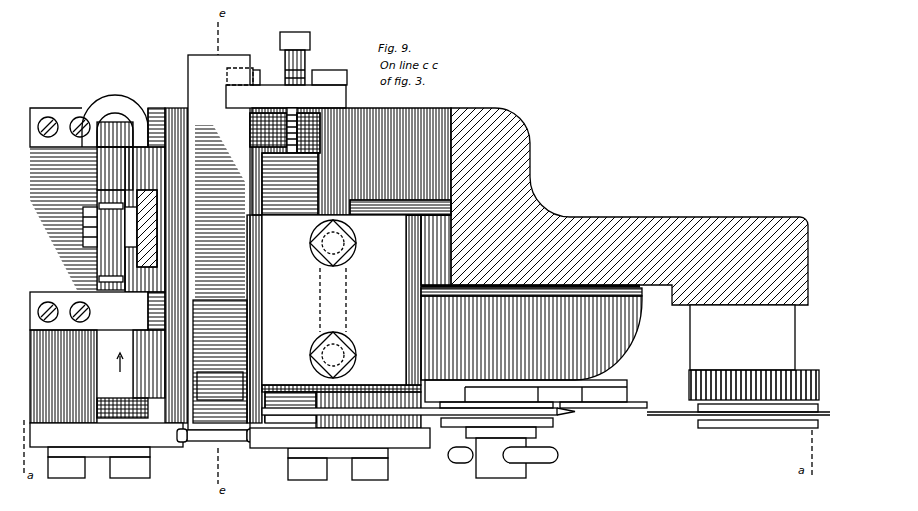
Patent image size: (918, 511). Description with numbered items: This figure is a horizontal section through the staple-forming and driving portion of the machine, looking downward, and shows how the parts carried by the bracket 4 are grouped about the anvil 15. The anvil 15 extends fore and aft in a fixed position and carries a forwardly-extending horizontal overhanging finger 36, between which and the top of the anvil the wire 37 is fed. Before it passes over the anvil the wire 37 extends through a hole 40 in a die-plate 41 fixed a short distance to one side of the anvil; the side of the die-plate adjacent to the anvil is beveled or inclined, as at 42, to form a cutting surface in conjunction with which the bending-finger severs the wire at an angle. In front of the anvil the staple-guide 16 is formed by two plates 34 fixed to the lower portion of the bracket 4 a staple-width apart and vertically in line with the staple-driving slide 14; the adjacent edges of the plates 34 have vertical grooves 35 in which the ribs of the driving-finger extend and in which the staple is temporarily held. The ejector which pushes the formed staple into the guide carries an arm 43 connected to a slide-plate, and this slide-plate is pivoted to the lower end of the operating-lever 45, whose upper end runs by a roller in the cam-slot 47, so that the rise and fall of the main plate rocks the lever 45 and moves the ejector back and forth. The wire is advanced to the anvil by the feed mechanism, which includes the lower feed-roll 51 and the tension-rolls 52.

The bracket 4 is at (529, 246).
The staple-driving slide 14 is at (113, 354).
The anvil 15 is at (190, 410).
The staple-guide 16 is at (241, 442).
The plates 34 is at (110, 452).
The vertical grooves 35 is at (184, 443).
The overhanging finger 36 is at (220, 361).
The wire 37 is at (403, 429).
The hole 40 is at (270, 395).
The die-plate 41 is at (296, 204).
The beveled cutting-surface 42 is at (291, 418).
The arm 43 is at (164, 425).
The operating-lever 45 is at (157, 222).
The cam-slot 47 is at (290, 407).
The lower feed-roll 51 is at (774, 420).
The tension-rolls 52 is at (576, 420).